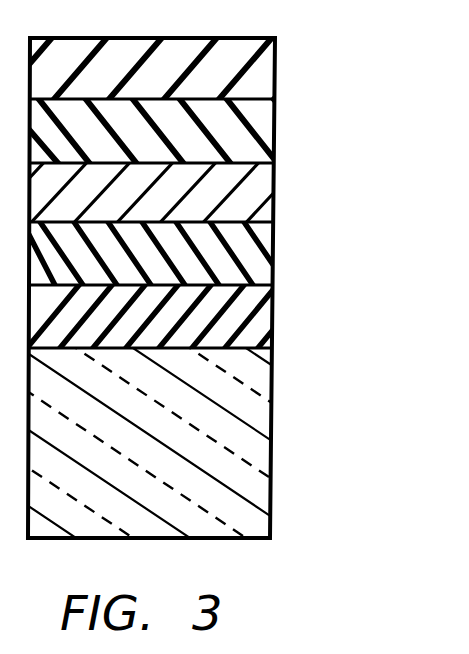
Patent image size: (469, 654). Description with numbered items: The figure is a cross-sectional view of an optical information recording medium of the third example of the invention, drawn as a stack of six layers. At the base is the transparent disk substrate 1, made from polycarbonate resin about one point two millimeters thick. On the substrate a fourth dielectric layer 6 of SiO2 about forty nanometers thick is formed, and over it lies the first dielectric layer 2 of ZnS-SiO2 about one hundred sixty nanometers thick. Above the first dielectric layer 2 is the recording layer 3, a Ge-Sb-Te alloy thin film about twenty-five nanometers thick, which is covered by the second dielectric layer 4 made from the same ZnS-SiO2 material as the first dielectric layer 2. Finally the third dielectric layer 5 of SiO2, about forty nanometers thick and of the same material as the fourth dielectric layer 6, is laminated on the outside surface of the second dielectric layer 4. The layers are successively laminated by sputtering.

The transparent disk substrate 1 is at (273, 373).
The fourth dielectric layer 6 is at (268, 316).
The first dielectric layer 2 is at (268, 263).
The recording layer 3 is at (258, 197).
The second dielectric layer 4 is at (263, 138).
The third dielectric layer 5 is at (265, 73).